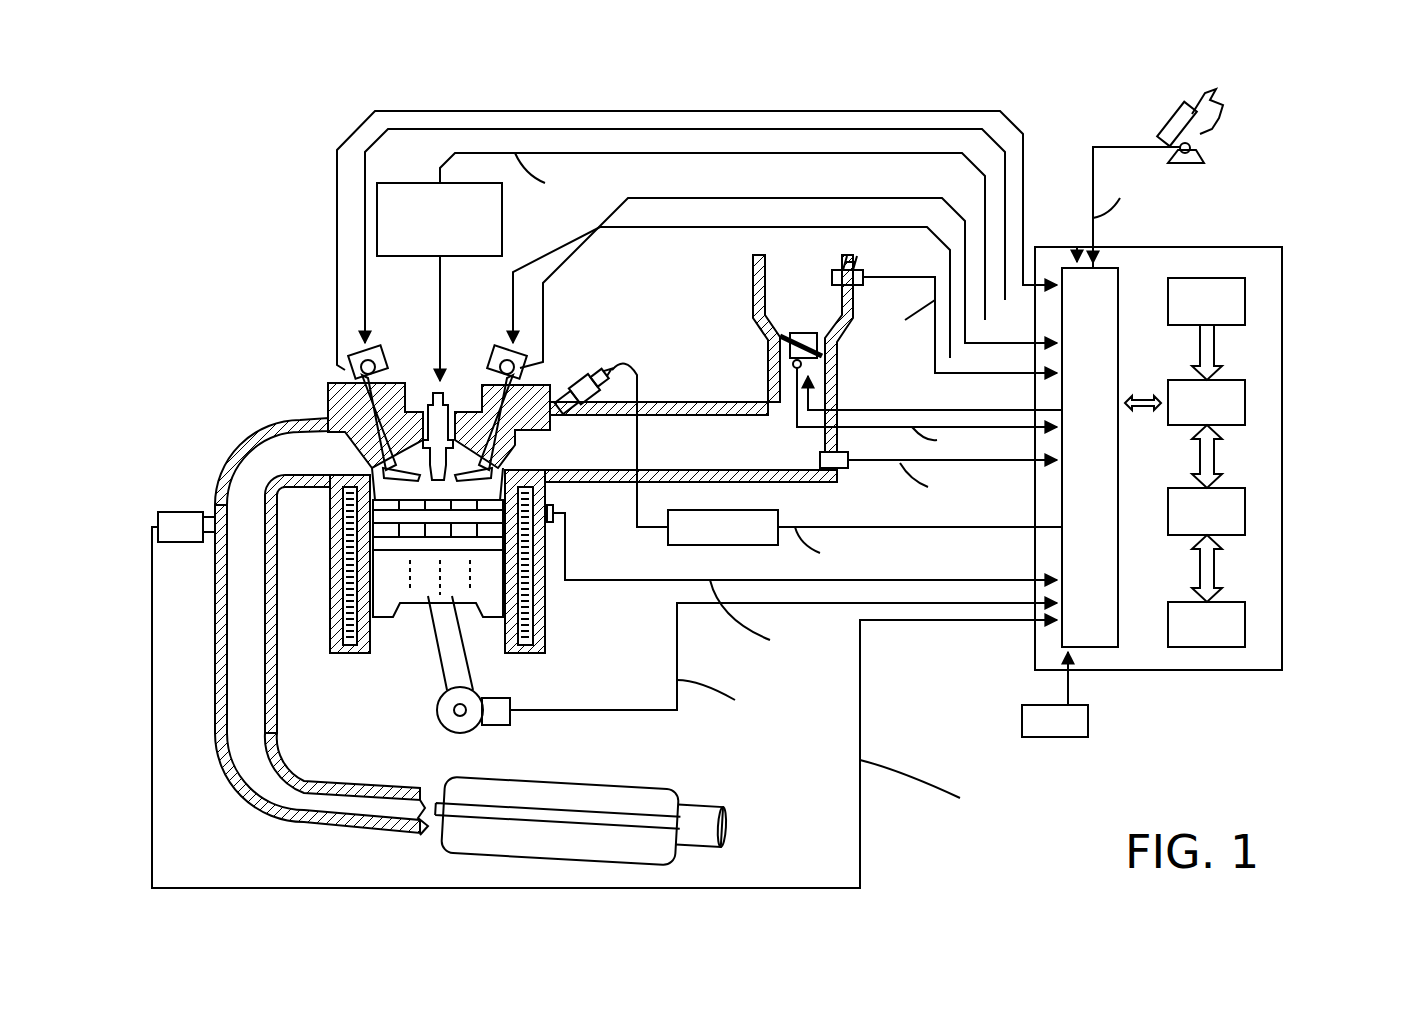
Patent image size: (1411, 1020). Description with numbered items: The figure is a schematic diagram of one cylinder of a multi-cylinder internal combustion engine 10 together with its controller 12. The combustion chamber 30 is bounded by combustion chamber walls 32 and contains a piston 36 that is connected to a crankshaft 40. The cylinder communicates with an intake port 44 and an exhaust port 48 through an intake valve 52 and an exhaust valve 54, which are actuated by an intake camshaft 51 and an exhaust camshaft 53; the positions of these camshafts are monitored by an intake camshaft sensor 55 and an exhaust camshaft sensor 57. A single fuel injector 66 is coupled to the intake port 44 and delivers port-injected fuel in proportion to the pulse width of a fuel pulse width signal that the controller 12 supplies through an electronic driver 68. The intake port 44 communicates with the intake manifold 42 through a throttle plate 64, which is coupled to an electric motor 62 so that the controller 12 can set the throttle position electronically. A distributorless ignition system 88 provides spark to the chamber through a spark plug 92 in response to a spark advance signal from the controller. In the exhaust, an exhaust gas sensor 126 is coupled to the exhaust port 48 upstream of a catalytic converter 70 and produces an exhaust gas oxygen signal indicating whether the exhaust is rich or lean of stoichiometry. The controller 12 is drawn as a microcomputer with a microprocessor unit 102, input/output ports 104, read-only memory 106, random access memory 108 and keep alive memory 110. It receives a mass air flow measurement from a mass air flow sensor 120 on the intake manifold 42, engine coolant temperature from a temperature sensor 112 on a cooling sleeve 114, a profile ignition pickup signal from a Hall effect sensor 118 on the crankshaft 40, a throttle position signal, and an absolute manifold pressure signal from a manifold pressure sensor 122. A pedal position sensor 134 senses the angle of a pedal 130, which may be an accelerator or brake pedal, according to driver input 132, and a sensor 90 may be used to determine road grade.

The internal combustion engine 10 is at (258, 335).
The controller 12 is at (1275, 247).
The combustion chamber 30 is at (350, 590).
The combustion chamber walls 32 is at (370, 650).
The piston 36 is at (446, 600).
The crankshaft 40 is at (445, 728).
The intake manifold 42 is at (819, 353).
The intake port 44 is at (691, 368).
The exhaust port 48 is at (321, 626).
The intake camshaft 51 is at (500, 350).
The intake valve 52 is at (483, 470).
The exhaust camshaft 53 is at (378, 350).
The exhaust valve 54 is at (335, 428).
The intake camshaft sensor 55 is at (525, 365).
The exhaust camshaft sensor 57 is at (350, 368).
The electric motor 62 is at (825, 343).
The throttle plate 64 is at (772, 345).
The fuel injector 66 is at (588, 382).
The electronic driver 68 is at (698, 545).
The catalytic converter 70 is at (628, 782).
The distributorless ignition system 88 is at (385, 183).
The sensor 90 is at (1040, 737).
The spark plug 92 is at (445, 393).
The microprocessor unit 102 is at (1245, 400).
The input/output ports 104 is at (1118, 278).
The read-only memory 106 is at (1245, 295).
The random access memory 108 is at (1245, 512).
The keep alive memory 110 is at (1245, 625).
The temperature sensor 112 is at (562, 520).
The cooling sleeve 114 is at (545, 605).
The Hall effect sensor 118 is at (500, 725).
The mass air flow sensor 120 is at (857, 268).
The manifold pressure sensor 122 is at (840, 470).
The exhaust gas sensor 126 is at (158, 515).
The pedal 130 is at (1162, 122).
The driver input 132 is at (1218, 98).
The pedal position sensor 134 is at (1200, 150).